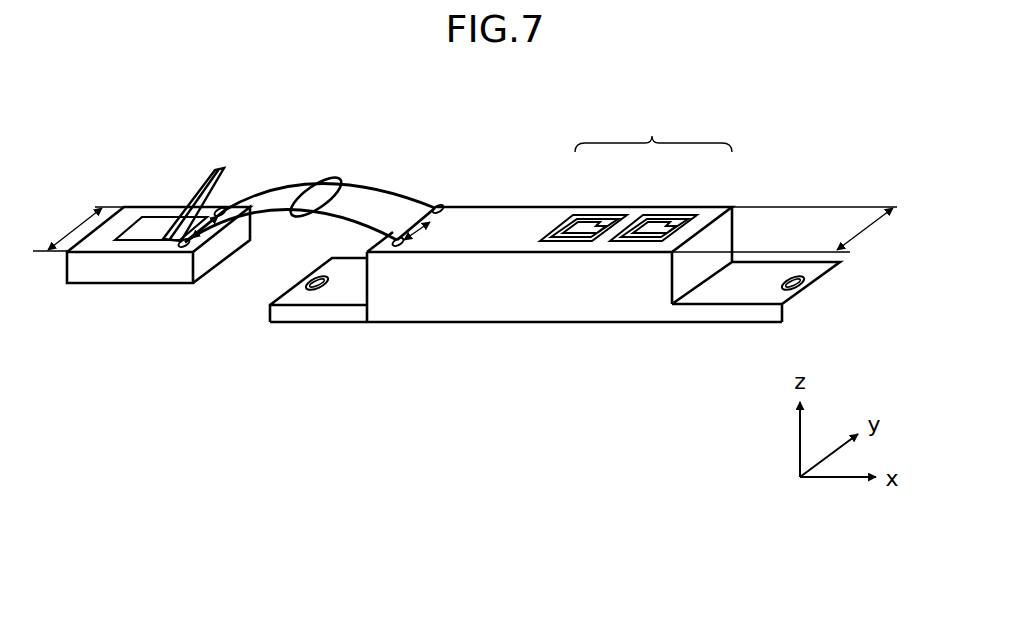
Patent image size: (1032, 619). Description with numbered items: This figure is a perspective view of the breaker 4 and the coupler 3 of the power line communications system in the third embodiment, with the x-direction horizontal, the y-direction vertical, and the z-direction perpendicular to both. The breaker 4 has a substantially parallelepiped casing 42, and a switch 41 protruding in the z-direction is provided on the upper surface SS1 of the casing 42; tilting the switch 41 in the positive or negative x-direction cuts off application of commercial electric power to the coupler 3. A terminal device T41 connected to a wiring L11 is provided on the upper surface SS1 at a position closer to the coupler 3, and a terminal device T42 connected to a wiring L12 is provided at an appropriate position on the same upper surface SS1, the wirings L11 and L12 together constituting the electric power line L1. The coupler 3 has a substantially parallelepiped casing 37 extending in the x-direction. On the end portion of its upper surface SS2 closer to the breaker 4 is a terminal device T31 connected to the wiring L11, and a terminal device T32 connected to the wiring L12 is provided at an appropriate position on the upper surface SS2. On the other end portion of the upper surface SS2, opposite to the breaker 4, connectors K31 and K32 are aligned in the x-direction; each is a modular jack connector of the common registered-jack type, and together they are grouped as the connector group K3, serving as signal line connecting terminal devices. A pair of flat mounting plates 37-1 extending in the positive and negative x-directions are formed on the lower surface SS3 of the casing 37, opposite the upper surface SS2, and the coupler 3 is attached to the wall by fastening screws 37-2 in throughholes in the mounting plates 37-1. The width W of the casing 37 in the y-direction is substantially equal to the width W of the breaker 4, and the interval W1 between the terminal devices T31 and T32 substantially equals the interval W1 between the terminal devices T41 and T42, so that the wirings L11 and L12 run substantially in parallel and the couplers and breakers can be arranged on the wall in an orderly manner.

The coupler 3 is at (522, 207).
The breaker 4 is at (100, 285).
The switch 41 is at (221, 168).
The casing 42 is at (133, 285).
The terminal device T41 is at (222, 210).
The terminal device T42 is at (183, 246).
The electric power line L1 is at (337, 180).
The wiring L11 is at (410, 195).
The wiring L12 is at (362, 211).
The terminal device T31 is at (443, 207).
The terminal device T32 is at (397, 244).
The upper surface SS1 is at (134, 208).
The upper surface SS2 is at (523, 235).
The lower surface SS3 is at (643, 320).
The casing 37 is at (575, 305).
The mounting plate 37-1 is at (358, 295).
The screw 37-2 is at (315, 287).
The connector group K3 is at (653, 126).
The connector K31 is at (585, 215).
The connector K32 is at (675, 215).
The width W is at (465, 226).
The interval W1 is at (222, 228).